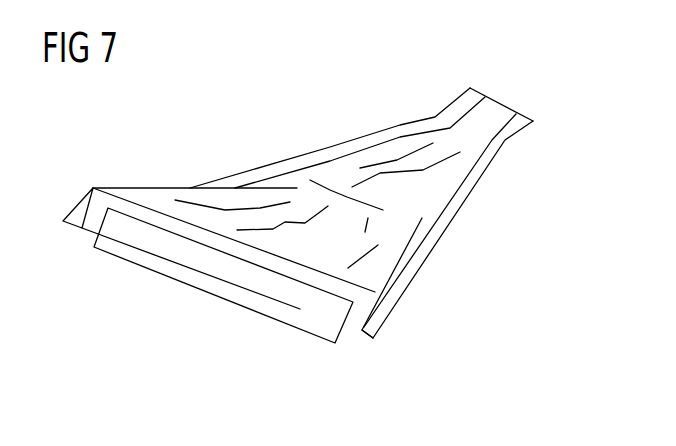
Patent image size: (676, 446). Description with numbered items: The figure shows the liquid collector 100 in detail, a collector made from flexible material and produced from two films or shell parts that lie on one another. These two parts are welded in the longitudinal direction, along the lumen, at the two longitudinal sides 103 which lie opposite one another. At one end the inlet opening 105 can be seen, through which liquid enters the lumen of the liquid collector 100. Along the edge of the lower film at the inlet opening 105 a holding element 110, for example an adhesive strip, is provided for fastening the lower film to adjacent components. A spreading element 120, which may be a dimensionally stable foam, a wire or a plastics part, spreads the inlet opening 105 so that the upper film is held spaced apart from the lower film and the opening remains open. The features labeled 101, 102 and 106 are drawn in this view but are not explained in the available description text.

The liquid collector 100 is at (295, 178).
The upper surface edge 101 is at (143, 192).
The bar end 102 is at (121, 236).
The longitudinal sides 103 is at (348, 144).
The inlet opening 105 is at (255, 282).
The tip edge 106 is at (498, 103).
The holding element 110 is at (176, 270).
The spreading element 120 is at (353, 323).